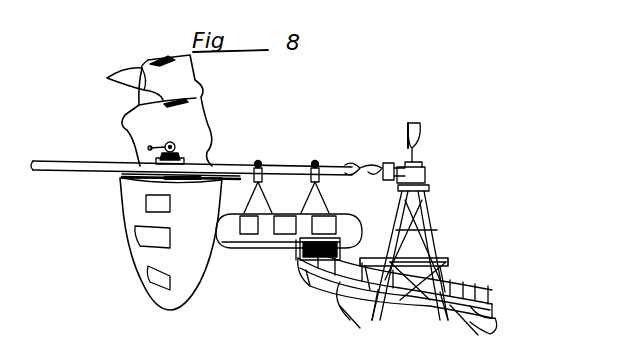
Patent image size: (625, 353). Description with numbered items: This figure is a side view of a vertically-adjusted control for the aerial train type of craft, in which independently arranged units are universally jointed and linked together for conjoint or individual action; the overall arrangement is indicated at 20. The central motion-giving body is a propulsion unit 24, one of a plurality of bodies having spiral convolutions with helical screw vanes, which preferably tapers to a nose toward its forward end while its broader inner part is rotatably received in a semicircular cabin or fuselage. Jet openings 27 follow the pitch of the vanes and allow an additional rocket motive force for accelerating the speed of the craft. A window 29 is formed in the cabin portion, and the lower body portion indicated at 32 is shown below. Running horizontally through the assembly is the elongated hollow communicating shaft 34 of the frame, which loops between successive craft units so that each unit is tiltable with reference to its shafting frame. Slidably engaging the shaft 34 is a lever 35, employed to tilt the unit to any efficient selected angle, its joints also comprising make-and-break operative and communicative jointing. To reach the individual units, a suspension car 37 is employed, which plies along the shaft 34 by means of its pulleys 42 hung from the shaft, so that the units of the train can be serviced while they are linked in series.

The toy figure assembly 20 is at (175, 52).
The propulsion unit 24 is at (185, 79).
The jet openings 27 is at (120, 74).
The window 29 is at (135, 236).
The lower fin 32 is at (140, 257).
The shaft 34 is at (53, 163).
The lever 35 is at (150, 148).
The suspension car 37 is at (261, 242).
The pulleys 42 is at (259, 163).